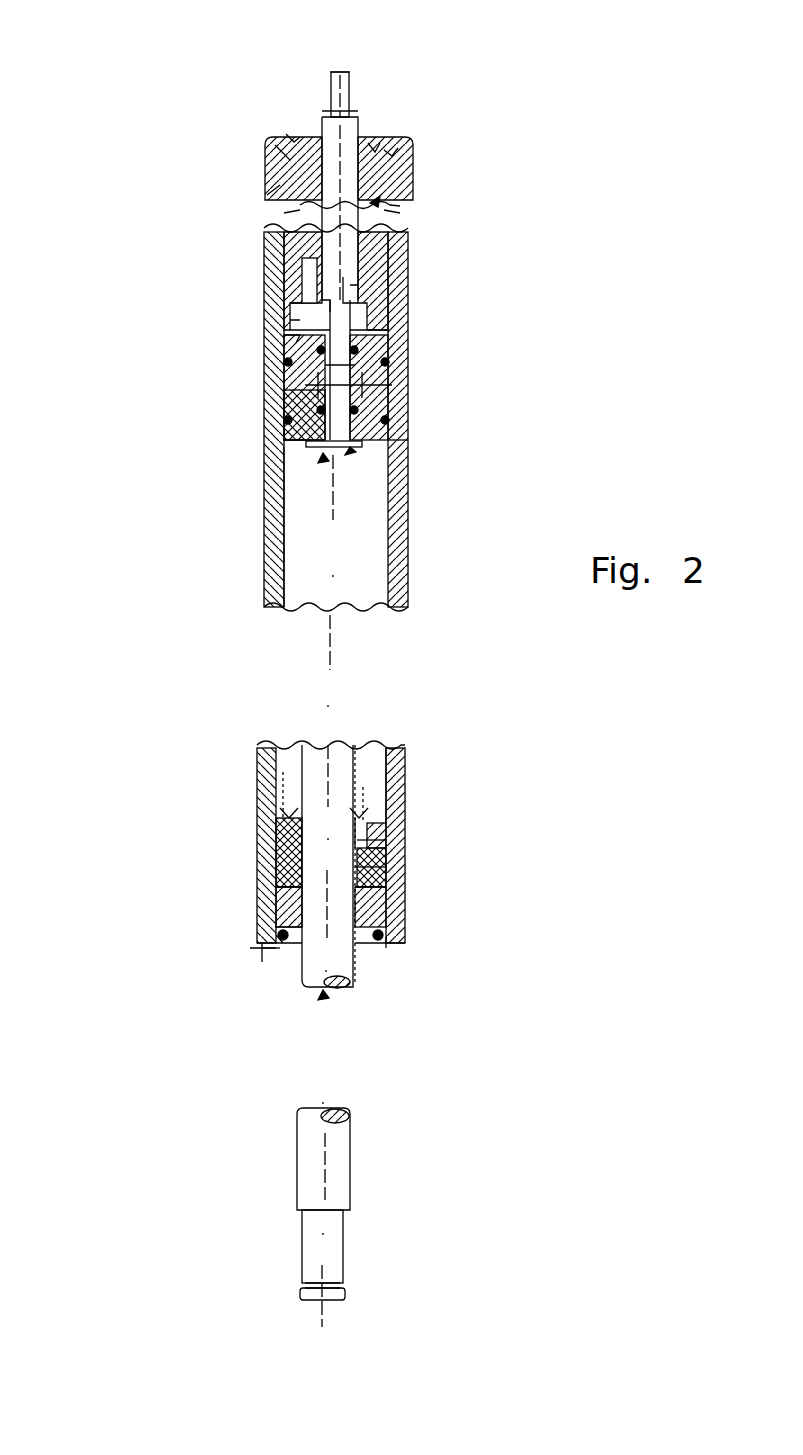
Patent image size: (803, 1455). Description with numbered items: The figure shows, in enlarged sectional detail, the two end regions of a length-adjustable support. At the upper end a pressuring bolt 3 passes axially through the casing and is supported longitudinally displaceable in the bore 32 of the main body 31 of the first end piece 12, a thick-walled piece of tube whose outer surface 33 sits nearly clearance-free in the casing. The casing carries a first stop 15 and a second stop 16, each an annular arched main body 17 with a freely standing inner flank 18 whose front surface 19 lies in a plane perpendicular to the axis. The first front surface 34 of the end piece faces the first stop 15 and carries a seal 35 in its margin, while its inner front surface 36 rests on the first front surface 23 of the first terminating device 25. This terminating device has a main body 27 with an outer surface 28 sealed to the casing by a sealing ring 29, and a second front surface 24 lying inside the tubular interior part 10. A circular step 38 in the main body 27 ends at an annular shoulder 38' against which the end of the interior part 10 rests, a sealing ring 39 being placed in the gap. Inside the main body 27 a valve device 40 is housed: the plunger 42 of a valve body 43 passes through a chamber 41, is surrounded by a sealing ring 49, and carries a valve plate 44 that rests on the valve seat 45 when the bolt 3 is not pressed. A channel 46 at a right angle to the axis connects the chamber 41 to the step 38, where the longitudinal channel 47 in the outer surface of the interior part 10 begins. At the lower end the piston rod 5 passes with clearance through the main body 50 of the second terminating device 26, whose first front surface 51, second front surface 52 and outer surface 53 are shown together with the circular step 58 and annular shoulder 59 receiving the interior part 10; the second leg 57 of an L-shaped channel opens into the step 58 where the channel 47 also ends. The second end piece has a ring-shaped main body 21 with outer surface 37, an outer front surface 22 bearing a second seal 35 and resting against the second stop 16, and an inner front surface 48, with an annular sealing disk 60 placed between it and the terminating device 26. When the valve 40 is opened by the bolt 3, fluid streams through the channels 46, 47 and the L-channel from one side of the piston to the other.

The pressuring bolt 3 is at (343, 72).
The piston rod 5 is at (323, 990).
The tubular interior part 10 is at (273, 603).
The first end piece 12 is at (372, 204).
The first stop 15 is at (272, 140).
The second stop 16 is at (262, 940).
The arched main body of the stop 17 is at (286, 132).
The inner flank of the stop 18 is at (322, 100).
The front surface of the stop edge 19 is at (390, 153).
The main body of the second end piece 21 is at (262, 917).
The outer front surface of the second end piece 22 is at (280, 947).
The first front surface of the terminating device 23 is at (305, 335).
The second front surface of the terminating device 24 is at (273, 497).
The first terminating device 25 is at (300, 318).
The second terminating device 26 is at (262, 817).
The main body of the first terminating device 27 is at (403, 313).
The outer surface of the terminating device 28 is at (292, 343).
The sealing ring 29 is at (403, 363).
The main body of the first end piece 31 is at (315, 212).
The bore of the tube piece 32 is at (331, 78).
The outer surface of the tube piece 33 is at (273, 263).
The first front surface of the end piece 34 is at (375, 150).
The seal 35 is at (271, 143).
The inner front surface of the first end piece 36 is at (403, 343).
The outer surface of the second end piece 37 is at (262, 912).
The circular step 38 is at (243, 399).
The annular shoulder 38' is at (207, 415).
The sealing ring 39 is at (403, 423).
The valve device 40 is at (323, 453).
The chamber 41 is at (290, 368).
The plunger 42 is at (330, 300).
The valve body 43 is at (403, 302).
The valve plate 44 is at (350, 447).
The valve seat 45 is at (300, 437).
The channel 46 is at (403, 387).
The channel 47 is at (403, 457).
The second front surface of the second end piece 48 is at (403, 885).
The sealing ring 49 is at (295, 347).
The main body of the second terminating device 50 is at (358, 815).
The first front surface of the second terminating device 51 is at (386, 810).
The second front surface of the second terminating device 52 is at (262, 897).
The outer surface of the second terminating device 53 is at (262, 882).
The second leg of the L-channel 57 is at (403, 842).
The circular step 58 is at (268, 851).
The annular shoulder 59 is at (275, 850).
The annular sealing disk 60 is at (403, 867).